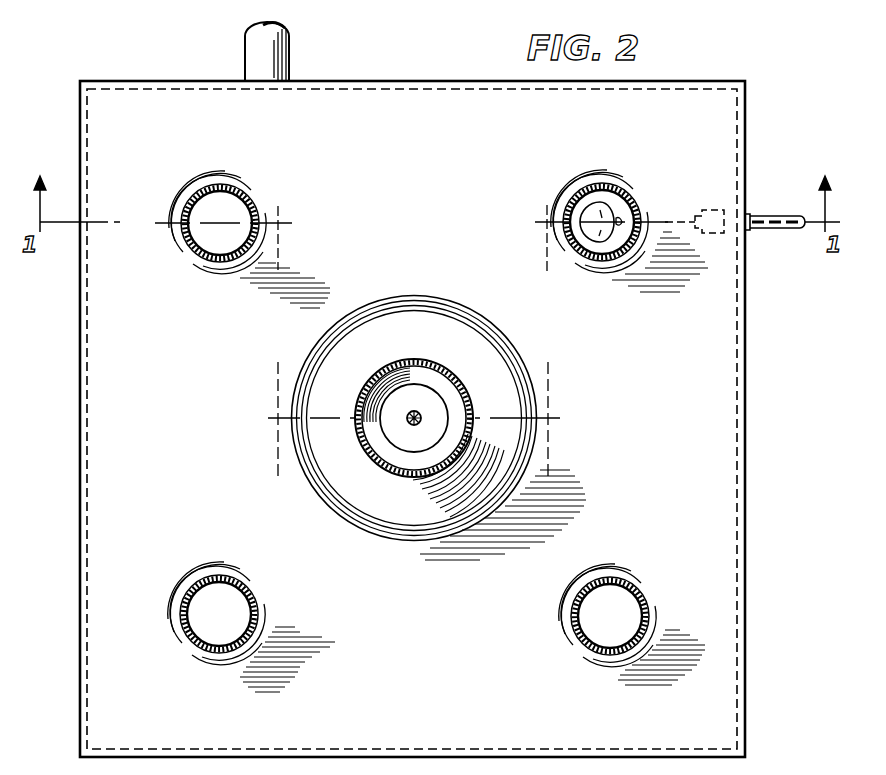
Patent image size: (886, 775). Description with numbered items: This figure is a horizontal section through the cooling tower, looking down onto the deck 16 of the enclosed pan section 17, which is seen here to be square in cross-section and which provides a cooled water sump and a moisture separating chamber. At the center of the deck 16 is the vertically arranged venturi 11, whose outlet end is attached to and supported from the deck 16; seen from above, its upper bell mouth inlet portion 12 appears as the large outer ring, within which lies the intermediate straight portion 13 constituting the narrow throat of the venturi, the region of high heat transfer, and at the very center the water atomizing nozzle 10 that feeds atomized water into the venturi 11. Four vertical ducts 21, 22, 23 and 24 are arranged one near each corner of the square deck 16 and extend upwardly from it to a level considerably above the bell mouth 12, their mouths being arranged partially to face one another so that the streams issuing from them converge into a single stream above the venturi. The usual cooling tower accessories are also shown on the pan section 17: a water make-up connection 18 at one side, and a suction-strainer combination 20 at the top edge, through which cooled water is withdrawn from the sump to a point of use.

The water atomizing nozzle 10 is at (410, 412).
The venturi 11 is at (470, 362).
The upper bell mouth inlet portion 12 is at (372, 388).
The intermediate straight portion 13 is at (401, 446).
The deck 16 is at (184, 378).
The pan section 17 is at (764, 126).
The water make-up connection 18 is at (718, 210).
The suction-strainer combination 20 is at (290, 50).
The vertical duct 21 is at (192, 595).
The vertical duct 22 is at (210, 192).
The vertical duct 23 is at (576, 200).
The vertical duct 24 is at (579, 600).